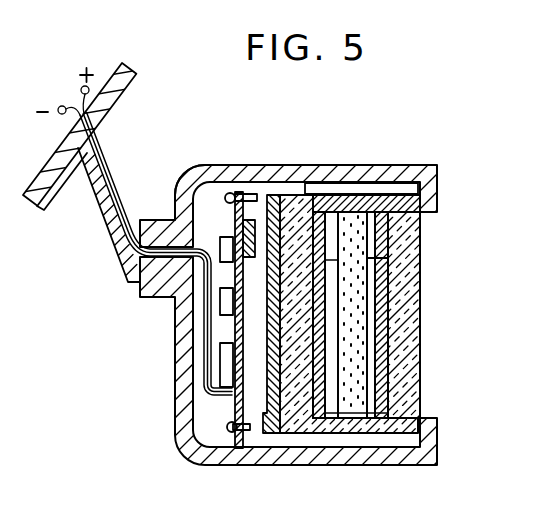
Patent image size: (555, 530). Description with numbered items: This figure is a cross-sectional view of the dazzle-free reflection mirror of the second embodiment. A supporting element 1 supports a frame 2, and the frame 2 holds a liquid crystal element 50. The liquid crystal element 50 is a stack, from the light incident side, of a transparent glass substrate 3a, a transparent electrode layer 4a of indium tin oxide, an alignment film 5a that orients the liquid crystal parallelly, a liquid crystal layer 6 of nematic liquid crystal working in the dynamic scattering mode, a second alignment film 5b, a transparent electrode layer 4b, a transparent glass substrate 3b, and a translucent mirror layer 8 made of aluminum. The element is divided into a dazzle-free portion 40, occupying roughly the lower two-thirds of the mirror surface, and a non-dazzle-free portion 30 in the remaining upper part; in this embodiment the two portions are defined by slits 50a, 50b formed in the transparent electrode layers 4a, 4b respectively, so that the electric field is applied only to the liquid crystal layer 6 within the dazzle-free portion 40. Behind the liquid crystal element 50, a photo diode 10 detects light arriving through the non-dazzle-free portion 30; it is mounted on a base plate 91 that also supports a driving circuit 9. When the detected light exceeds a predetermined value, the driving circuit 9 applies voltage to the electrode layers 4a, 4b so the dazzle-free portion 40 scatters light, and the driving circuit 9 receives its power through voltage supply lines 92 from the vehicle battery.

The supporting element 1 is at (118, 78).
The frame 2 is at (400, 176).
The transparent glass substrate 3a is at (420, 226).
The transparent glass substrate 3b is at (300, 425).
The transparent electrode layer 4a is at (384, 234).
The transparent electrode layer 4b is at (322, 357).
The alignment film 5a is at (370, 287).
The alignment film 5b is at (333, 333).
The liquid crystal layer 6 is at (355, 305).
The translucent mirror layer 8 is at (278, 420).
The driving circuit 9 is at (223, 363).
The photo diode 10 is at (237, 208).
The non-dazzle-free portion 30 is at (351, 211).
The dazzle-free portion 40 is at (354, 421).
The liquid crystal element 50 is at (428, 409).
The slit 50a is at (378, 262).
The slit 50b is at (306, 252).
The base plate 91 is at (213, 193).
The voltage supply lines 92 is at (186, 176).